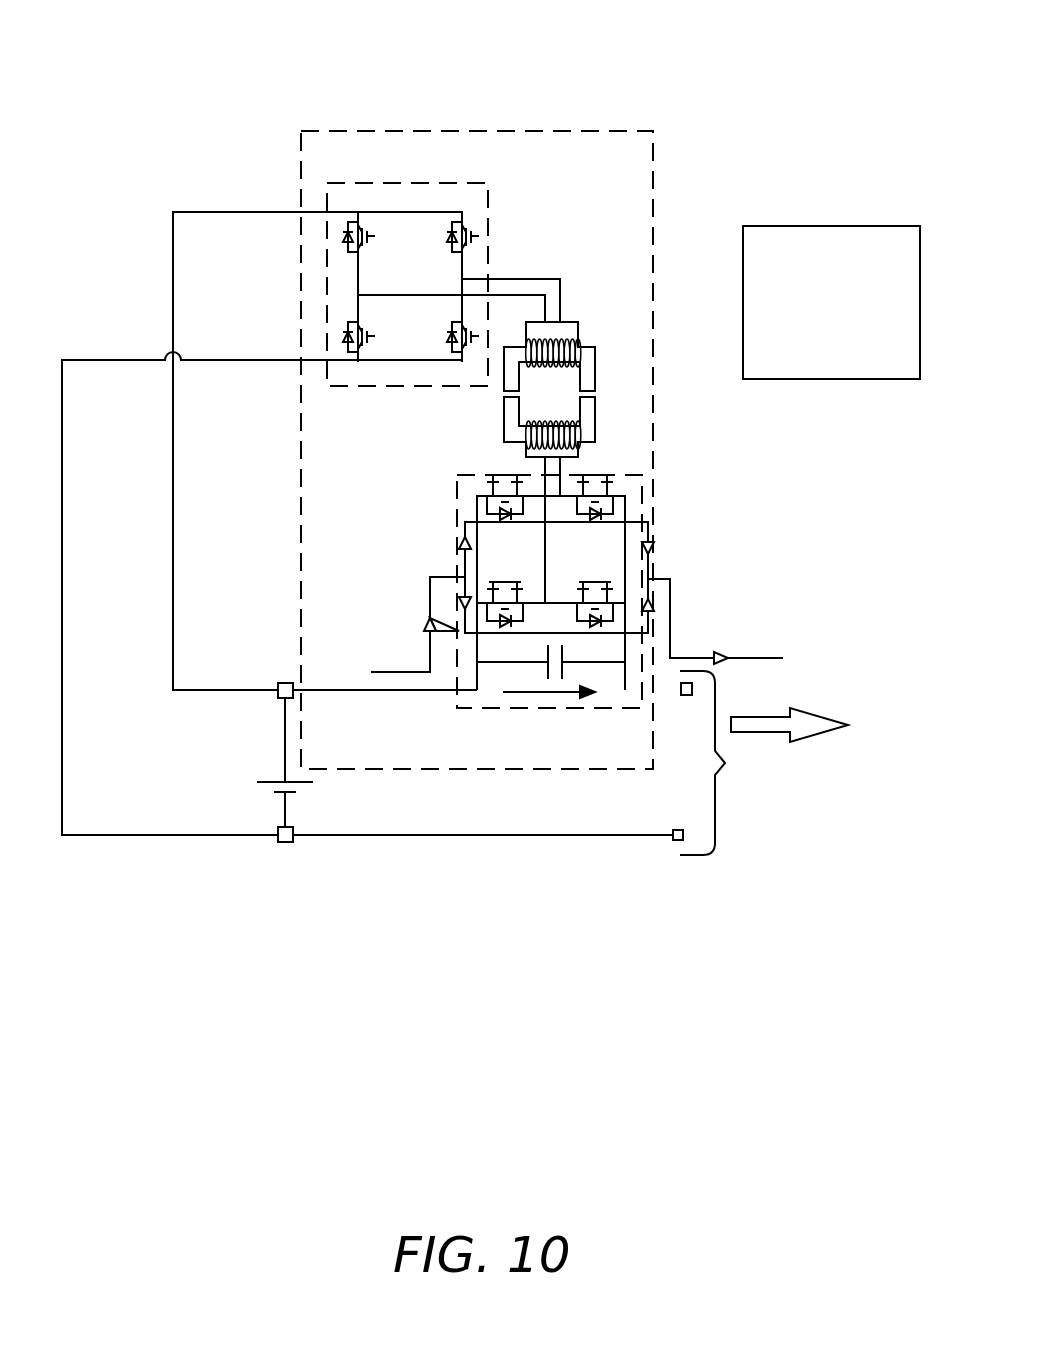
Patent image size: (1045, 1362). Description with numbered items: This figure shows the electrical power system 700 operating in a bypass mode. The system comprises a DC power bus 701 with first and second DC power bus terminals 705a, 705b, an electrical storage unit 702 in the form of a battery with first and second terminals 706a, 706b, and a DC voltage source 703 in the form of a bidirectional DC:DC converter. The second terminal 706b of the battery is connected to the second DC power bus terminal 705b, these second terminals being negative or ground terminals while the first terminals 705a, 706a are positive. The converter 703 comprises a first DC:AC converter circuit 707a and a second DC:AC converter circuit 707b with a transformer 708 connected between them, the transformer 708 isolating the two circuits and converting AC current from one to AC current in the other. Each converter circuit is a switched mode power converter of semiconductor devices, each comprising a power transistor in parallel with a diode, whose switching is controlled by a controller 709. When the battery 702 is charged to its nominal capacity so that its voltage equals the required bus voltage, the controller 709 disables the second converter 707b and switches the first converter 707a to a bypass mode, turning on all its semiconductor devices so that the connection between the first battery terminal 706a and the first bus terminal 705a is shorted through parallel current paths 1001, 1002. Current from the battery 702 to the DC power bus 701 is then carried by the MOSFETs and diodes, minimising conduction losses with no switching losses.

The electrical power system 700 is at (212, 60).
The DC power bus 701 is at (764, 763).
The electrical storage unit 702 is at (302, 784).
The DC voltage source 703 is at (653, 408).
The first DC power bus terminal 705a is at (686, 696).
The second DC power bus terminal 705b is at (678, 840).
The first terminal of the electrical storage unit 706a is at (278, 700).
The second terminal of the electrical storage unit 706b is at (278, 830).
The first DC:AC converter circuit 707a is at (457, 522).
The second DC:AC converter circuit 707b is at (488, 198).
The transformer 708 is at (504, 410).
The controller 709 is at (870, 319).
The current path 1001 is at (648, 527).
The current path 1002 is at (648, 617).